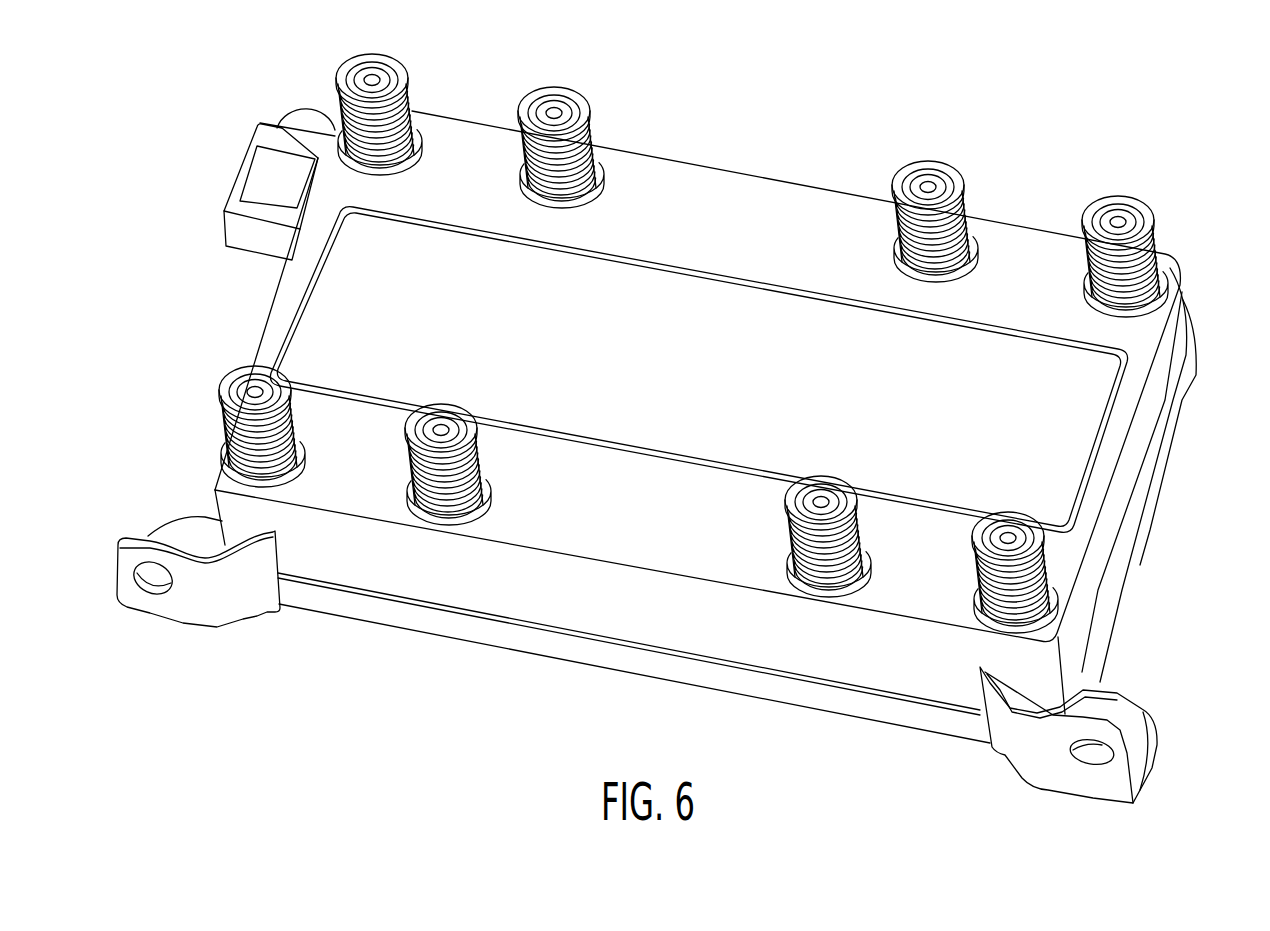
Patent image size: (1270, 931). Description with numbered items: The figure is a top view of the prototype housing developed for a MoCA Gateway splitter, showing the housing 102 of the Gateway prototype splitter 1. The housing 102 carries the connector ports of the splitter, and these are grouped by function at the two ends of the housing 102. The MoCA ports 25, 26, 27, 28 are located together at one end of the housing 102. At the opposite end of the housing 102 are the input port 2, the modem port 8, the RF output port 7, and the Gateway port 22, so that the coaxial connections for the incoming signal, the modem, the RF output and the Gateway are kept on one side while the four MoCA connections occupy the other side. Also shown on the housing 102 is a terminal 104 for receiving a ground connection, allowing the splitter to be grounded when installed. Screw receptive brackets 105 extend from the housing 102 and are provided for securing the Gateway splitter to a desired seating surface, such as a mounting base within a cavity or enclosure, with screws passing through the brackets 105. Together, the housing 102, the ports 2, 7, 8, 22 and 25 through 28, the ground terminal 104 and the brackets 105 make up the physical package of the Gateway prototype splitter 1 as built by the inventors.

The Gateway prototype splitter 1 is at (550, 760).
The input port 2 is at (338, 73).
The RF output port 7 is at (220, 393).
The modem port 8 is at (590, 97).
The Gateway port 22 is at (410, 437).
The MoCA port 25 is at (793, 502).
The MoCA port 26 is at (973, 565).
The MoCA port 27 is at (1155, 214).
The MoCA port 28 is at (960, 173).
The housing 102 is at (1168, 516).
The terminal 104 is at (244, 153).
The screw receptive brackets 105 is at (178, 618).